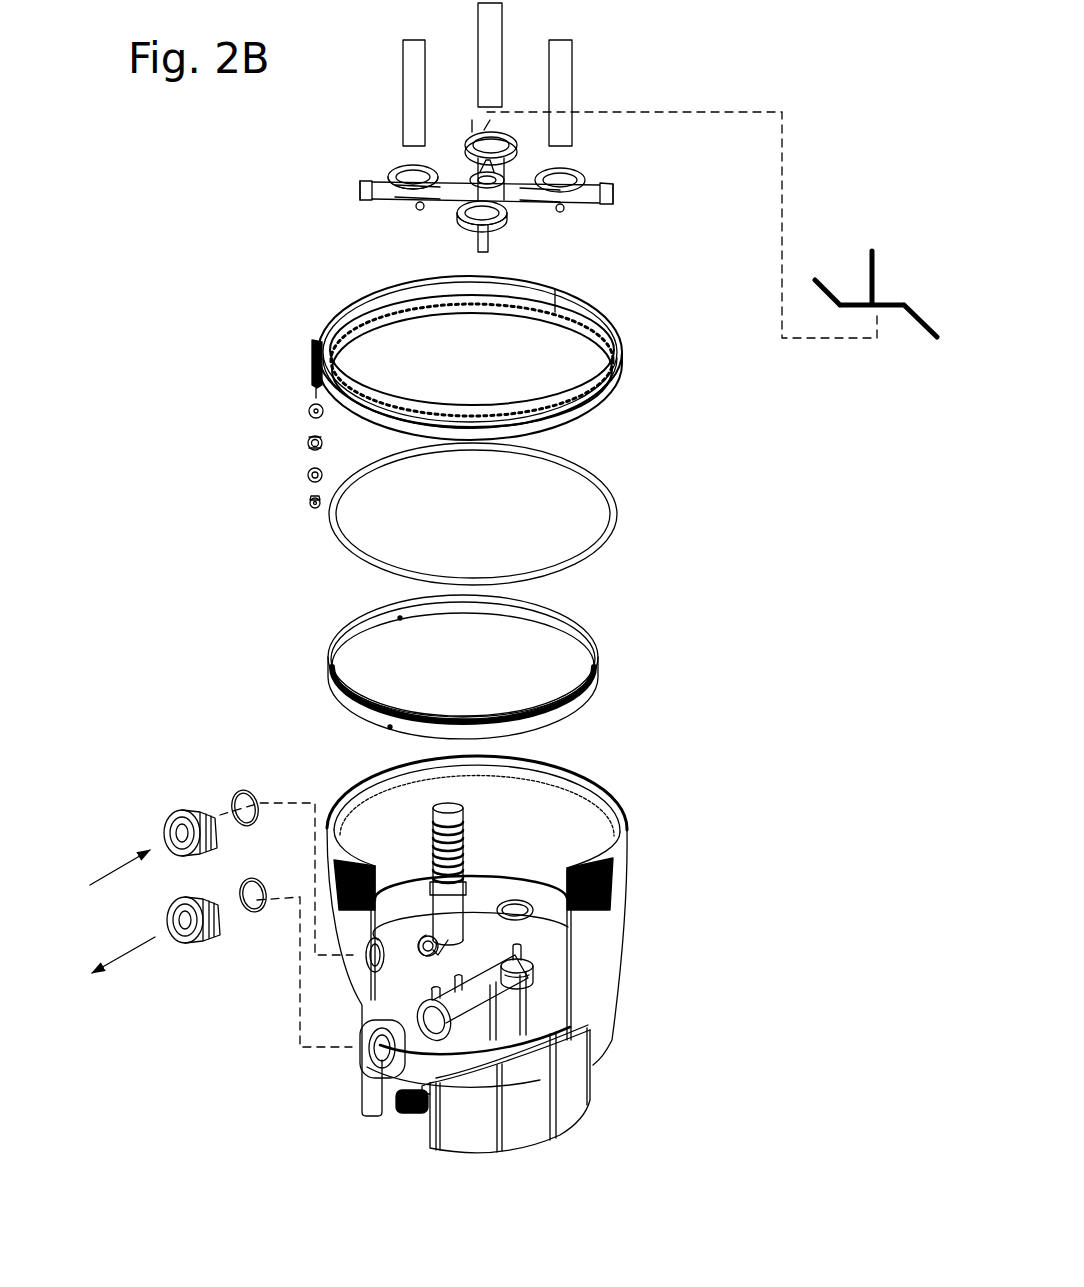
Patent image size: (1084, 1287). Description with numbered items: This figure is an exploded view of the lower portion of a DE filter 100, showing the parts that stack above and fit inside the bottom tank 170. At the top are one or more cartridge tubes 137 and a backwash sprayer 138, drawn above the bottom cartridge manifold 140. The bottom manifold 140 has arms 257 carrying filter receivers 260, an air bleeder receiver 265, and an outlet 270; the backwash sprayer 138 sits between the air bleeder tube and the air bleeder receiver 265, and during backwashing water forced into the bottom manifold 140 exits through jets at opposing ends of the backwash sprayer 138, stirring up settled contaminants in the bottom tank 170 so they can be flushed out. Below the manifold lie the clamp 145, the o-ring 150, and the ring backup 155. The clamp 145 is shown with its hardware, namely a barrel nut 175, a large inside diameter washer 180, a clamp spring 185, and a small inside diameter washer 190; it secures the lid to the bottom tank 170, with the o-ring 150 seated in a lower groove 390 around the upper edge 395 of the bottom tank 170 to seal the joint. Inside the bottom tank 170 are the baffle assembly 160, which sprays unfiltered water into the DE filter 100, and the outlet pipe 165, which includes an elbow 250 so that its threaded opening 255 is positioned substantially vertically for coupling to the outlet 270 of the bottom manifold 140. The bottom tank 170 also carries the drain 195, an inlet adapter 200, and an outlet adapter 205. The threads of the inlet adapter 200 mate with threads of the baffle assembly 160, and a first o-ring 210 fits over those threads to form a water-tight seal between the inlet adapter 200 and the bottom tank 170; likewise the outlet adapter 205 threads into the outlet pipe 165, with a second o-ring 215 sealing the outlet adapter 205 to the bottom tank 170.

The DE filter 100 is at (145, 294).
The cartridge tubes 137 is at (578, 45).
The backwash sprayer 138 is at (908, 318).
The bottom cartridge manifold 140 is at (474, 162).
The clamp 145 is at (626, 368).
The o-ring 150 is at (630, 515).
The ring backup 155 is at (604, 692).
The baffle assembly 160 is at (470, 856).
The outlet pipe 165 is at (512, 1028).
The bottom tank 170 is at (490, 928).
The barrel nut 175 is at (311, 506).
The large inside diameter washer 180 is at (306, 477).
The clamp spring 185 is at (306, 441).
The small inside diameter washer 190 is at (308, 409).
The drain 195 is at (393, 1100).
The inlet adapter 200 is at (162, 810).
The outlet adapter 205 is at (174, 946).
The first o-ring 210 is at (236, 786).
The second o-ring 215 is at (254, 912).
The elbow 250 is at (465, 1003).
The opening 255 is at (532, 961).
The arms 257 is at (360, 190).
The filter receivers 260 is at (395, 170).
The air bleeder receiver 265 is at (494, 172).
The outlet 270 is at (438, 217).
The lower groove 390 is at (606, 790).
The upper edge 395 is at (620, 808).